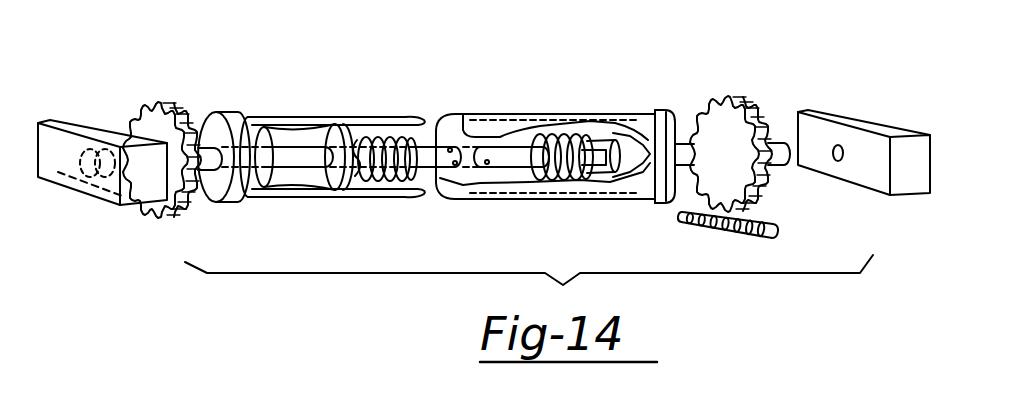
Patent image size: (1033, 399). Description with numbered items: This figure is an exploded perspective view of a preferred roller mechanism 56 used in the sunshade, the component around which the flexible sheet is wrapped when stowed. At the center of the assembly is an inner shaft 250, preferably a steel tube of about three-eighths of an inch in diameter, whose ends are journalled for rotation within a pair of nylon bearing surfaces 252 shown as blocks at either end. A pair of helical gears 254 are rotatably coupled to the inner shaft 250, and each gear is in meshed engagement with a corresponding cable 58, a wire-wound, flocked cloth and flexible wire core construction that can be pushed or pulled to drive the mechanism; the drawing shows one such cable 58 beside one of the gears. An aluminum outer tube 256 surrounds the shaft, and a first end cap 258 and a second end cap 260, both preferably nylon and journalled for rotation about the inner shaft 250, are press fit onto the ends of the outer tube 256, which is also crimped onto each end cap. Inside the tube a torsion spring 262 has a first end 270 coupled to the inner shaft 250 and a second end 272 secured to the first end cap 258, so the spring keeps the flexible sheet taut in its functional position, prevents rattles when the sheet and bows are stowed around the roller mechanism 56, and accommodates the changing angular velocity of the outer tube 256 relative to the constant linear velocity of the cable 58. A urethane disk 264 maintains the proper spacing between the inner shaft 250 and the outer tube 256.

The roller mechanism 56 is at (781, 101).
The cable 58 is at (767, 233).
The inner shaft 250 is at (697, 147).
The nylon bearing surfaces 252 is at (100, 124).
The helical gears 254 is at (163, 106).
The outer tube 256 is at (490, 123).
The first end cap 258 is at (660, 117).
The second end cap 260 is at (217, 127).
The torsion spring 262 is at (397, 123).
The urethane disk 264 is at (330, 130).
The first end 270 is at (373, 173).
The second end 272 is at (603, 130).